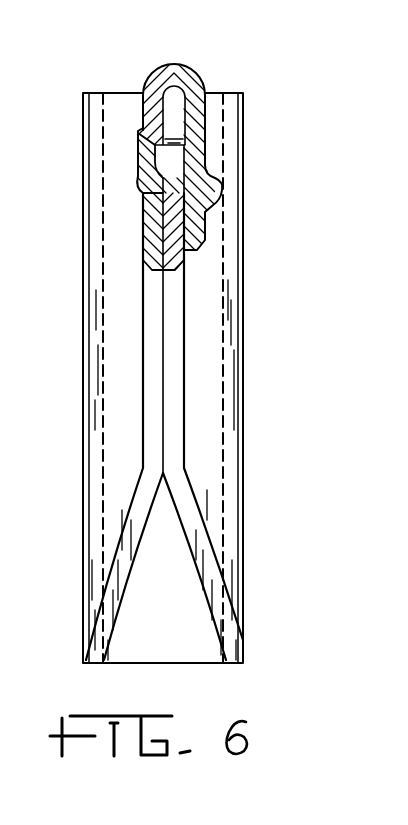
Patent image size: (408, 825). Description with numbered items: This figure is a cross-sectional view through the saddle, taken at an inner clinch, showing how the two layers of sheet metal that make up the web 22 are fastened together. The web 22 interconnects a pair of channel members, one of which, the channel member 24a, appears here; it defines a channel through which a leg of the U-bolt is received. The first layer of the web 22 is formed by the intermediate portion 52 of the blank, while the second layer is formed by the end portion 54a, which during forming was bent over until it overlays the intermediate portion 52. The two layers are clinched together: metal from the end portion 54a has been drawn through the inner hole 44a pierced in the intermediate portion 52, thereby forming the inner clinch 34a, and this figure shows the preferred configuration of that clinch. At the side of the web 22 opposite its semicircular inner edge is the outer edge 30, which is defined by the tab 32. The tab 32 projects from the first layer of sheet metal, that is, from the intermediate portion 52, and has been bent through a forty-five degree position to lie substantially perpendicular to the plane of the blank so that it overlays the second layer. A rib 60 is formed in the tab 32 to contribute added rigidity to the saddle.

The web 22 is at (172, 426).
The channel member 24a is at (95, 254).
The outer edge 30 is at (177, 66).
The tab 32 is at (160, 246).
The inner clinch 34a is at (137, 136).
The inner hole 44a is at (140, 176).
The intermediate portion 52 is at (155, 431).
The end portion 54a is at (175, 430).
The rib 60 is at (222, 180).